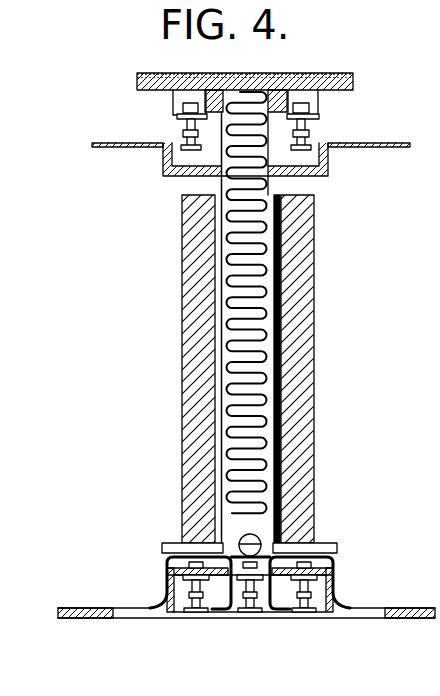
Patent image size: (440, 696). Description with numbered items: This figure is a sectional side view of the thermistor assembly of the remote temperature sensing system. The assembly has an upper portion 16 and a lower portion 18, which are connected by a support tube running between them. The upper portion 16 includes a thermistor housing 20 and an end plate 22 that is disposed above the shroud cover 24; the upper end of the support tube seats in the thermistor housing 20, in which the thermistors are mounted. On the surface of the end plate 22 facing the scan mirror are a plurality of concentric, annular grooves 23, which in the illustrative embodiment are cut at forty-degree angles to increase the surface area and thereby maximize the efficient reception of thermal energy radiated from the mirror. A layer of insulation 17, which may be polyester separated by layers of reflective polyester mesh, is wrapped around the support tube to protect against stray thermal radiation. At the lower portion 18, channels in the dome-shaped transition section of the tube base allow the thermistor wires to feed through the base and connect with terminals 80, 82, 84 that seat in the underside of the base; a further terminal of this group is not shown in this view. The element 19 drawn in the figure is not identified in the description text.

The upper portion 16 is at (123, 120).
The layer of insulation 17 is at (310, 365).
The lower portion 18 is at (153, 585).
The bellows 19 is at (278, 187).
The thermistor housing 20 is at (328, 118).
The end plate 22 is at (355, 88).
The concentric annular grooves 23 is at (342, 72).
The shroud cover 24 is at (165, 167).
The terminal 80 is at (183, 613).
The terminal 82 is at (247, 613).
The terminal 84 is at (307, 613).